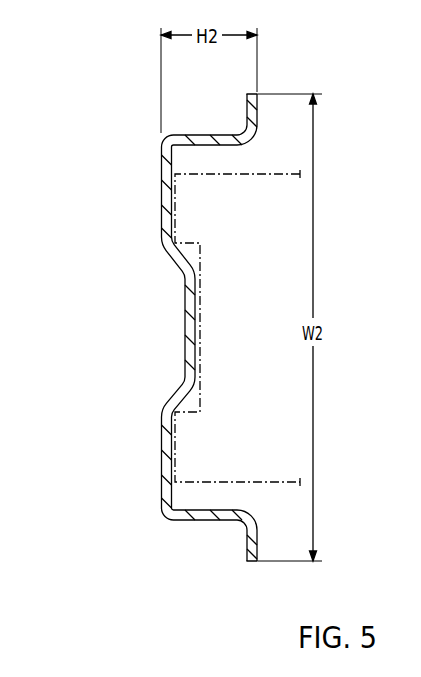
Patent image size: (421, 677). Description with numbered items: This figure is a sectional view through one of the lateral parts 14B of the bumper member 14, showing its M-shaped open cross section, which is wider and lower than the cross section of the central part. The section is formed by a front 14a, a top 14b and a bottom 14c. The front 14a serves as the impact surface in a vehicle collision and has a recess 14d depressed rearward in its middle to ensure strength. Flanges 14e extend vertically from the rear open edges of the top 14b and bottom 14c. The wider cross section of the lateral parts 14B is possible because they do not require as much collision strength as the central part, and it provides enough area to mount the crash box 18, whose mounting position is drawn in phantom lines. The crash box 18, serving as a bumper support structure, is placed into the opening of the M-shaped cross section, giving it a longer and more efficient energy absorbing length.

The bumper reinforcement 14 is at (163, 330).
The lateral part 14B is at (125, 165).
The front 14a is at (161, 211).
The top 14b is at (213, 135).
The bottom 14c is at (203, 521).
The recess 14d is at (185, 318).
The flange 14e is at (256, 108).
The crash box 18 is at (232, 176).